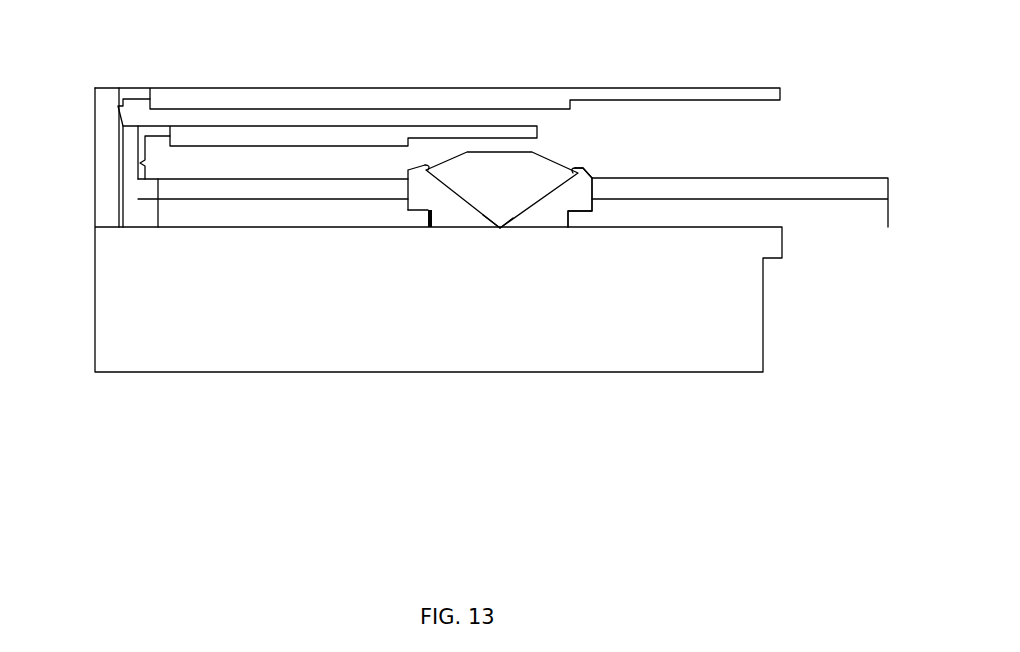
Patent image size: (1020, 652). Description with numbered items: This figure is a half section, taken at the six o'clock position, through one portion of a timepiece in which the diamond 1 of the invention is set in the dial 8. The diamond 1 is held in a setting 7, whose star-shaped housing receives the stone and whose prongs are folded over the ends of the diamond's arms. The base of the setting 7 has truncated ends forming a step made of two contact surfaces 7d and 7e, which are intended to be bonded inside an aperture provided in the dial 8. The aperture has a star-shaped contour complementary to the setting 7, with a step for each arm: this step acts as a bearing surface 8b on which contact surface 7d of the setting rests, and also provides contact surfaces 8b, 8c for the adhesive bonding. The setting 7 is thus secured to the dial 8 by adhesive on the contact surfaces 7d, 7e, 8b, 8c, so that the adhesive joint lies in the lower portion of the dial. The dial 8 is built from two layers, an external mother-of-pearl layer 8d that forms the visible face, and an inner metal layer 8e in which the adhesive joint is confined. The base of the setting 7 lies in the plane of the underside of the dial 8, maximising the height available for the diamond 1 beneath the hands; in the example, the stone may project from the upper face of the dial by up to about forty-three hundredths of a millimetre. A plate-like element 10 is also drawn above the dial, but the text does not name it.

The diamond 1 is at (533, 175).
The setting 7 is at (500, 243).
The contact surface 7d is at (423, 212).
The contact surface 7e is at (433, 216).
The dial 8 is at (845, 209).
The bearing surface 8b is at (420, 224).
The contact surface 8c is at (431, 224).
The external mother-of-pearl layer 8d is at (193, 188).
The inner metal layer 8e is at (205, 213).
The cover plate 10 is at (267, 133).